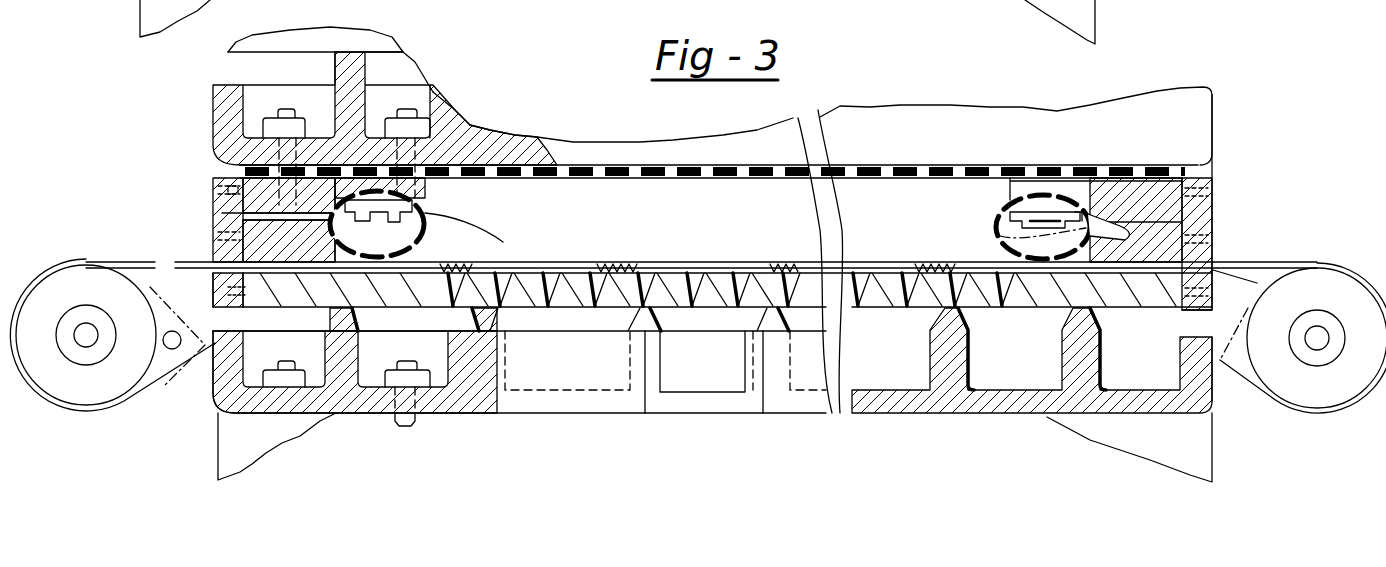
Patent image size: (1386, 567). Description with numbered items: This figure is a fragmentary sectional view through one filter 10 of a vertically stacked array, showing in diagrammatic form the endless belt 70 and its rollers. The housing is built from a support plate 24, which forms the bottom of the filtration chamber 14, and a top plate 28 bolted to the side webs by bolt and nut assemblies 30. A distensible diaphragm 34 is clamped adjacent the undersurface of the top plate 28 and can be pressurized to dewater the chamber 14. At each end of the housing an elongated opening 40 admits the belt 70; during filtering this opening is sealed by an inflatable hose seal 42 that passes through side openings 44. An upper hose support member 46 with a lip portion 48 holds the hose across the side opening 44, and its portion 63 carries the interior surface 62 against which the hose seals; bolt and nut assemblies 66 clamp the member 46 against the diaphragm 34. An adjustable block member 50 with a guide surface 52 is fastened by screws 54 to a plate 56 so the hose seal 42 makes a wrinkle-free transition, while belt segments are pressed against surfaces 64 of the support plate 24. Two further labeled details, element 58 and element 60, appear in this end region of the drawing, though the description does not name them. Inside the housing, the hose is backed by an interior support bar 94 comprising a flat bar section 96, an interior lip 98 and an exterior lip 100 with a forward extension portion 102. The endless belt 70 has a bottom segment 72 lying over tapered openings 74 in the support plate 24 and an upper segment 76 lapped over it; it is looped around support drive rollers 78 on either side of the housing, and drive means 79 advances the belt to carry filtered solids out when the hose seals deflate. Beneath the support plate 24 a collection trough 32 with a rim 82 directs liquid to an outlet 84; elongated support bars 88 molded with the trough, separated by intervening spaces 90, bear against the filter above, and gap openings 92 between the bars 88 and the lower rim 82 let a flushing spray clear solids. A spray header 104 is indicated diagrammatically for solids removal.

The filter 10 is at (128, 23).
The filtration chamber 14 is at (470, 252).
The support plate 24 is at (308, 300).
The top plate 28 is at (507, 150).
The bolt and nut assemblies 30 is at (398, 116).
The collection trough 32 is at (80, 0).
The distensible diaphragm 34 is at (595, 167).
The elongated openings 40 is at (1005, 225).
The hose seal 42 is at (427, 219).
The side openings 44 is at (340, 255).
The upper hose support member 46 is at (243, 173).
The lip portion 48 is at (400, 186).
The adjustable block member 50 is at (278, 288).
The guide surface 52 is at (213, 232).
The screws 54 is at (208, 235).
The plate 56 is at (224, 213).
The screw 58 is at (210, 190).
The end plate 60 is at (212, 259).
The interior surface 62 is at (349, 205).
The portion 63 is at (401, 225).
The surfaces 64 is at (386, 224).
The bolt and nut assemblies 66 is at (279, 117).
The endless belt 70 is at (126, 236).
The bottom segment 72 is at (866, 266).
The tapered openings 74 is at (695, 318).
The upper segment 76 is at (908, 318).
The support drive rollers 78 is at (106, 295).
The drive means 79 is at (64, 312).
The rim 82 is at (222, 348).
The outlet 84 is at (738, 414).
The elongated support bars 88 is at (364, 325).
The intervening spaces 90 is at (448, 366).
The gap openings 92 is at (551, 322).
The interior support bar 94 is at (498, 320).
The flat bar section 96 is at (1031, 205).
The interior lip 98 is at (1002, 208).
The exterior lip 100 is at (1071, 205).
The forward extension portion 102 is at (1093, 207).
The spray header 104 is at (167, 349).